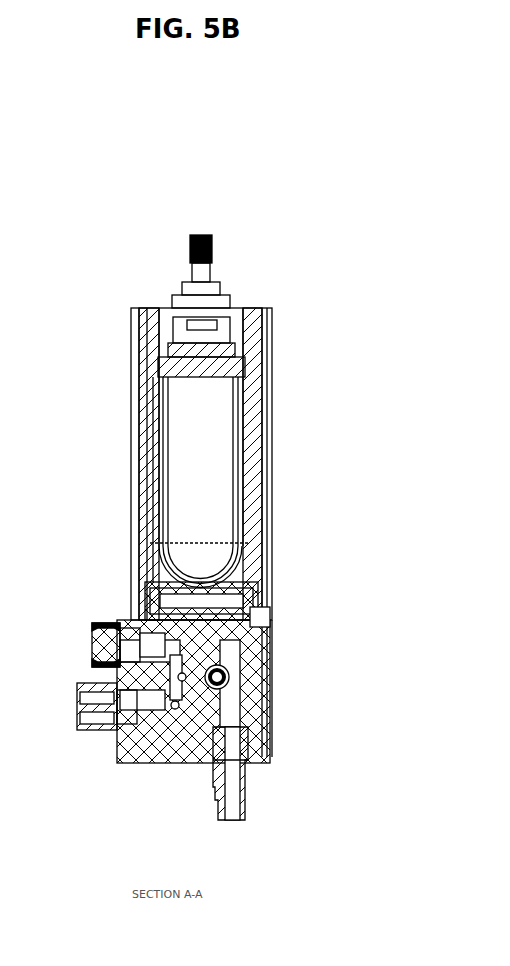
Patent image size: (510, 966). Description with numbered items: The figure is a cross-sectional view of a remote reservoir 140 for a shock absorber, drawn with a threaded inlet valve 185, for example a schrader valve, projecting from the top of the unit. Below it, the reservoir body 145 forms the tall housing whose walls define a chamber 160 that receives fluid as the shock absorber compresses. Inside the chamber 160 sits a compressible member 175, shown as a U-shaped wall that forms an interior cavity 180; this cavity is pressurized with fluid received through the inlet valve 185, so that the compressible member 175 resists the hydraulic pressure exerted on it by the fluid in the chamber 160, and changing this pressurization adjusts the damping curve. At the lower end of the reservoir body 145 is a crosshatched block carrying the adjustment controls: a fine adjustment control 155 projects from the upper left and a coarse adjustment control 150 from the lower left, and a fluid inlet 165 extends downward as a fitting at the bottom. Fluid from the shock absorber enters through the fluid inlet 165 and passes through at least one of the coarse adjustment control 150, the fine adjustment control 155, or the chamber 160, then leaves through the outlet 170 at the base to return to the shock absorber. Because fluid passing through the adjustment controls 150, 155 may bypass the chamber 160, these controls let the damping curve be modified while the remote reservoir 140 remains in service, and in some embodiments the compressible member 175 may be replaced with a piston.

The remote reservoir 140 is at (90, 196).
The reservoir body 145 is at (143, 505).
The coarse adjustment control 150 is at (78, 693).
The fine adjustment control 155 is at (93, 620).
The chamber 160 is at (270, 483).
The fluid inlet 165 is at (233, 817).
The outlet 170 is at (178, 765).
The compressible member 175 is at (267, 403).
The interior cavity 180 is at (195, 465).
The inlet valve 185 is at (222, 232).